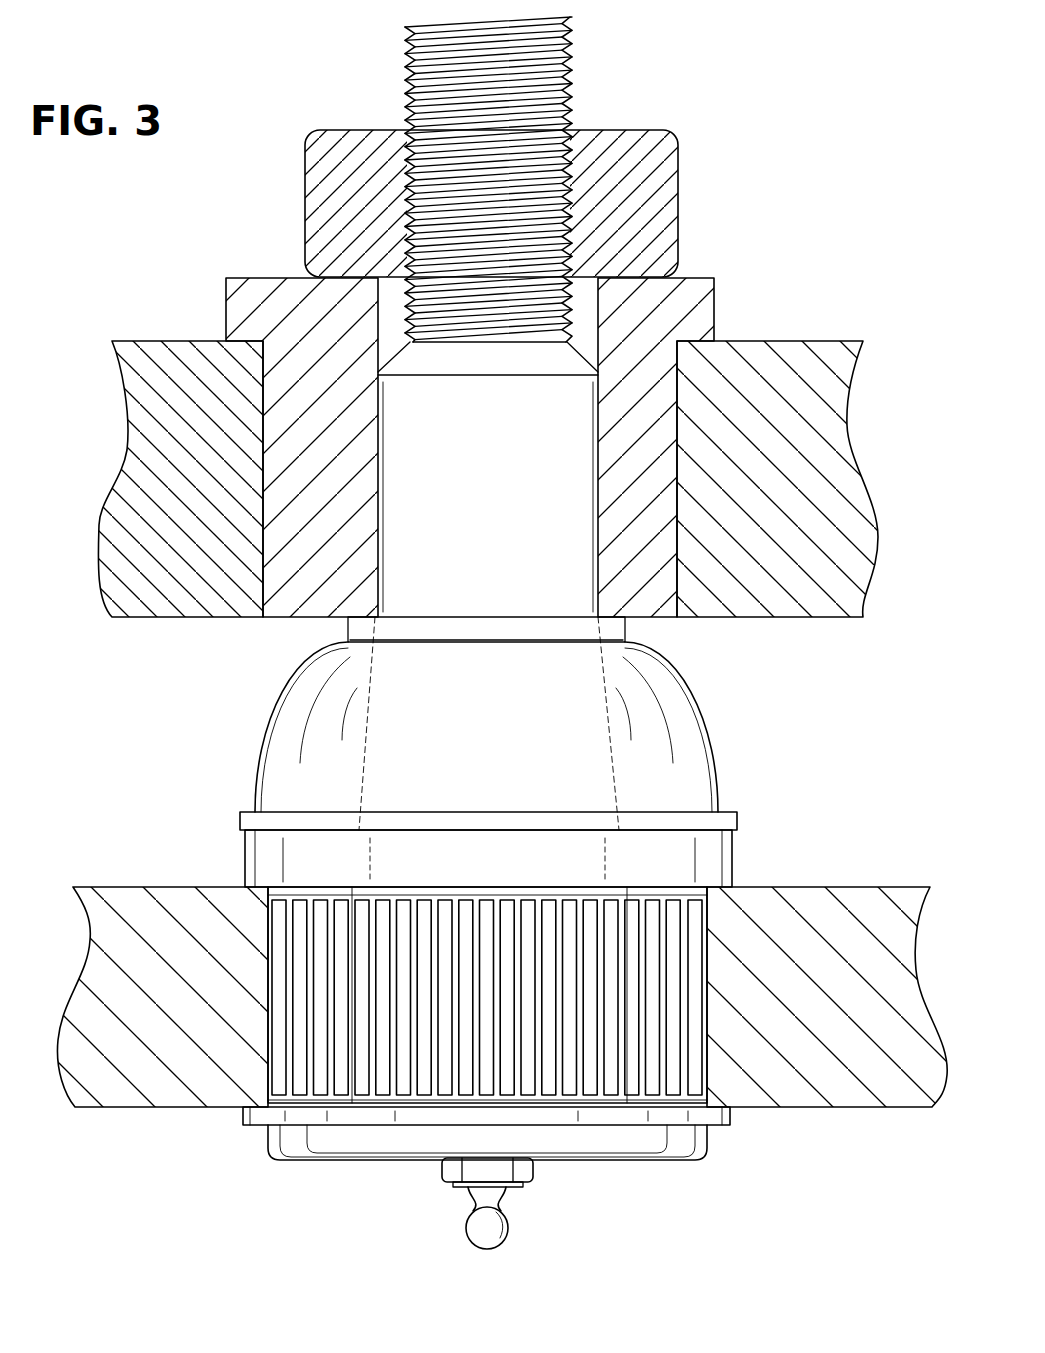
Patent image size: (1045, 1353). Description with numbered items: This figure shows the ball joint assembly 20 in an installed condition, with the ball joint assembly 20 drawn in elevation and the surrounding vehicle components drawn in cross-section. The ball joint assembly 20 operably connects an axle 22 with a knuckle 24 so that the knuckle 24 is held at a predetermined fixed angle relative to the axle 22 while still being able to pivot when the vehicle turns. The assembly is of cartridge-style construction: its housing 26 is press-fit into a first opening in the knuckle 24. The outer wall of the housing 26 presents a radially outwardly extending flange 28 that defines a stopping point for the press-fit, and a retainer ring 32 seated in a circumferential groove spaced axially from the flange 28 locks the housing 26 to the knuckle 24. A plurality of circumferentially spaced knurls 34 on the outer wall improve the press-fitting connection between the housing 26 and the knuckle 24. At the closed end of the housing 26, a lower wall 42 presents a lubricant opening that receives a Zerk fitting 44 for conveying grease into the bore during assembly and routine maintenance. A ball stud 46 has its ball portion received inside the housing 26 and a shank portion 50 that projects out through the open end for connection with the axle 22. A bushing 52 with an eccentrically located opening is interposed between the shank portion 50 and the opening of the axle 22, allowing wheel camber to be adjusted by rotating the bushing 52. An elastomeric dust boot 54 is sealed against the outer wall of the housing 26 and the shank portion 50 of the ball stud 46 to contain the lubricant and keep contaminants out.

The ball joint assembly 20 is at (266, 1179).
The axle 22 is at (773, 372).
The knuckle 24 is at (828, 923).
The housing 26 is at (663, 1170).
The radially outwardly extending flange 28 is at (715, 852).
The retainer ring 32 is at (727, 1115).
The knurls 34 is at (342, 955).
The lower wall 42 is at (370, 1158).
The Zerk fitting 44 is at (489, 1238).
The ball stud 46 is at (602, 98).
The shank portion 50 is at (499, 474).
The bushing 52 is at (318, 345).
The dust boot 54 is at (680, 703).